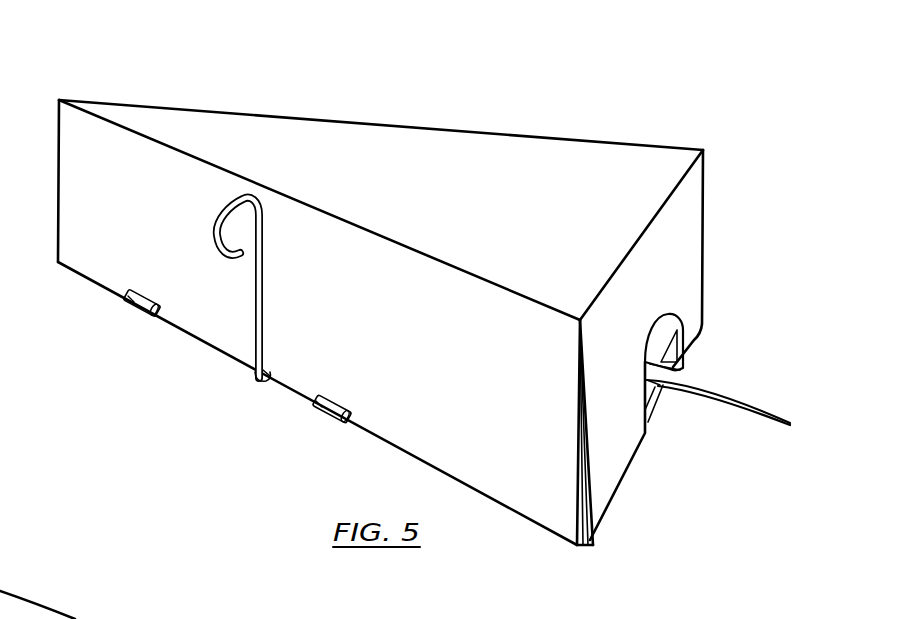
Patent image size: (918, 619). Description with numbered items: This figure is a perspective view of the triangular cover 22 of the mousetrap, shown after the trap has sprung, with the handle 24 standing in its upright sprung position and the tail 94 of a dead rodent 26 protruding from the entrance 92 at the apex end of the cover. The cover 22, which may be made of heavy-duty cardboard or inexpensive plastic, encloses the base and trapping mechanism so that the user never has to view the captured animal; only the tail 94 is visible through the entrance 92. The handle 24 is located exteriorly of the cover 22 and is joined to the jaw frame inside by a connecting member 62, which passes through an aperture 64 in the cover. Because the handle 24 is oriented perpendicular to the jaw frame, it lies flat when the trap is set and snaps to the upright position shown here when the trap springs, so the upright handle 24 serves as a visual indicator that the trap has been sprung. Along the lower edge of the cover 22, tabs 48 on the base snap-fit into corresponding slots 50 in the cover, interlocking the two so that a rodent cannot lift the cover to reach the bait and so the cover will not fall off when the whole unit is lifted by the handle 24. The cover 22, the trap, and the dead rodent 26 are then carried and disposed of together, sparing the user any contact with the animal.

The cover 22 is at (490, 153).
The handle 24 is at (263, 298).
The dead rodent 26 is at (703, 390).
The tabs 48 is at (130, 308).
The slots 50 is at (143, 295).
The connecting member 62 is at (253, 380).
The aperture 64 is at (275, 363).
The entrance 92 is at (655, 335).
The tail 94 is at (737, 390).